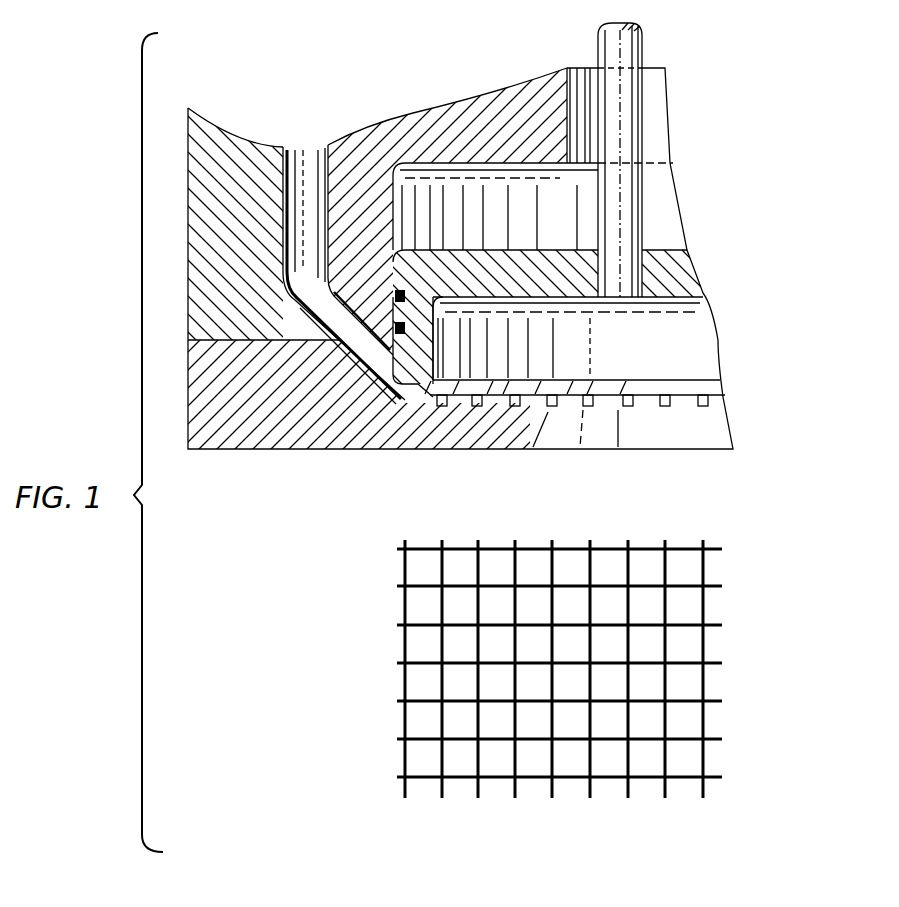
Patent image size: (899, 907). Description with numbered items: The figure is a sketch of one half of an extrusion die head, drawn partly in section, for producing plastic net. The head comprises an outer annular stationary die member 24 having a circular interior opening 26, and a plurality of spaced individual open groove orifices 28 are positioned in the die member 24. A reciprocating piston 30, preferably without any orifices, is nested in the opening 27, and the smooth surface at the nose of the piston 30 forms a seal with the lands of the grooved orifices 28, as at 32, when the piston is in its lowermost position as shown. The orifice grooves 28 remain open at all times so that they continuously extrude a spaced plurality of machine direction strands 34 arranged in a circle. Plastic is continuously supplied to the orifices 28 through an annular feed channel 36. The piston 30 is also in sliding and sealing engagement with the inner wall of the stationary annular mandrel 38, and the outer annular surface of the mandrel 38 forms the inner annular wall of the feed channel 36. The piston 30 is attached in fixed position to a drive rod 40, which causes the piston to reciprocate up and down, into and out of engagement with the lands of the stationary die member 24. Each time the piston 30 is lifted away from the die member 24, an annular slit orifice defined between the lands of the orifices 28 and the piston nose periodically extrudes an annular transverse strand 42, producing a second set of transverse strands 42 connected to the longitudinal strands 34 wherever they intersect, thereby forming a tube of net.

The outer annular stationary die member 24 is at (251, 440).
The circular interior opening 26 is at (593, 433).
The opening 27 is at (475, 190).
The open groove orifices 28 is at (703, 397).
The reciprocating piston 30 is at (690, 273).
The seal 32 is at (413, 382).
The machine direction strands 34 is at (707, 640).
The annular feed channel 36 is at (305, 152).
The stationary annular mandrel 38 is at (397, 123).
The drive rod 40 is at (622, 77).
The transverse strands 42 is at (398, 663).